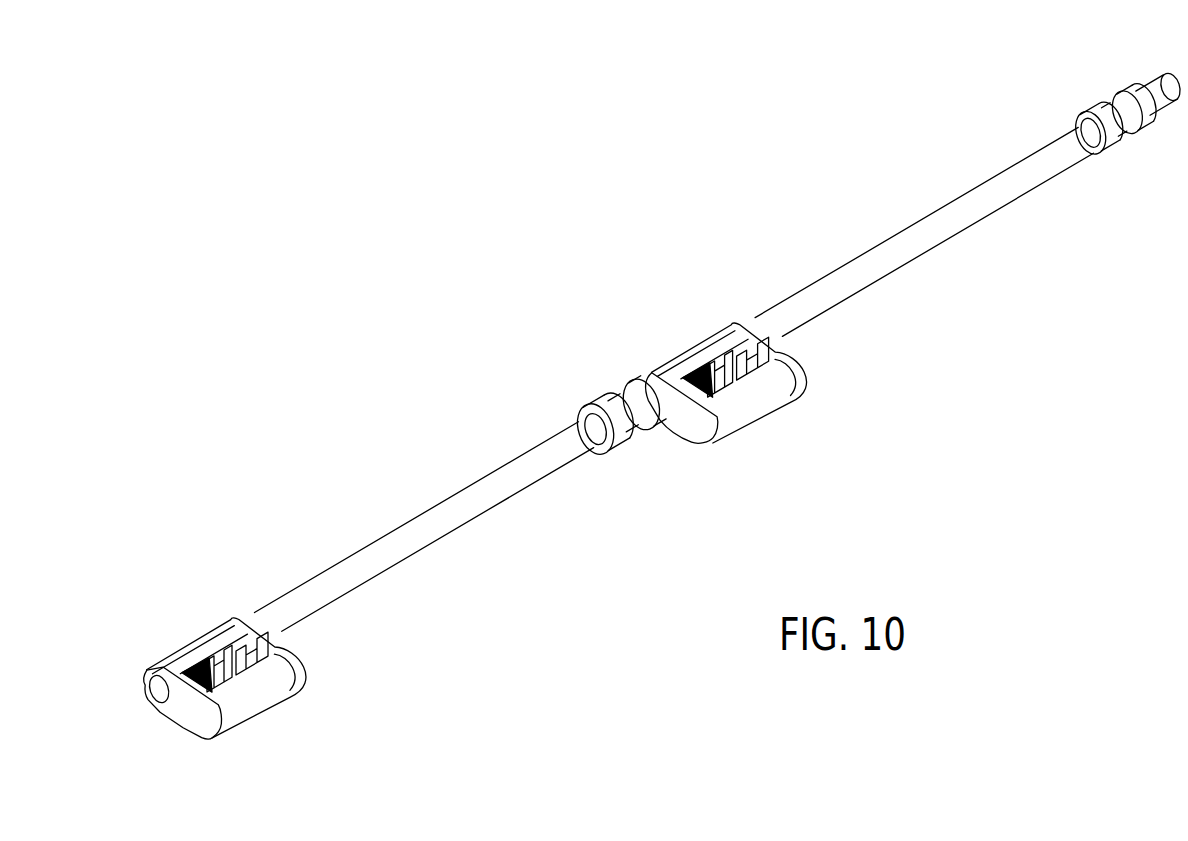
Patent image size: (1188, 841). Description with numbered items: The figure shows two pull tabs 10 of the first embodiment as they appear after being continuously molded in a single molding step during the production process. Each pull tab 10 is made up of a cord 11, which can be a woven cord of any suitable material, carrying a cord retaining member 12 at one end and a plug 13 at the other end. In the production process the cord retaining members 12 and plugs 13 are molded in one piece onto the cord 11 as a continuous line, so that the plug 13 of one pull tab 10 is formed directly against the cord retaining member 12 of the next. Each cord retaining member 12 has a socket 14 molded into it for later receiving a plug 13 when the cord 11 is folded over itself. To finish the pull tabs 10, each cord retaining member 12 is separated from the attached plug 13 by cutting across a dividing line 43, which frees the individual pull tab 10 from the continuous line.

The pull tab 10 is at (613, 258).
The cord 11 is at (935, 235).
The cord retaining member 12 is at (706, 348).
The plug 13 is at (1127, 100).
The socket 14 is at (747, 323).
The dividing line 43 is at (662, 427).